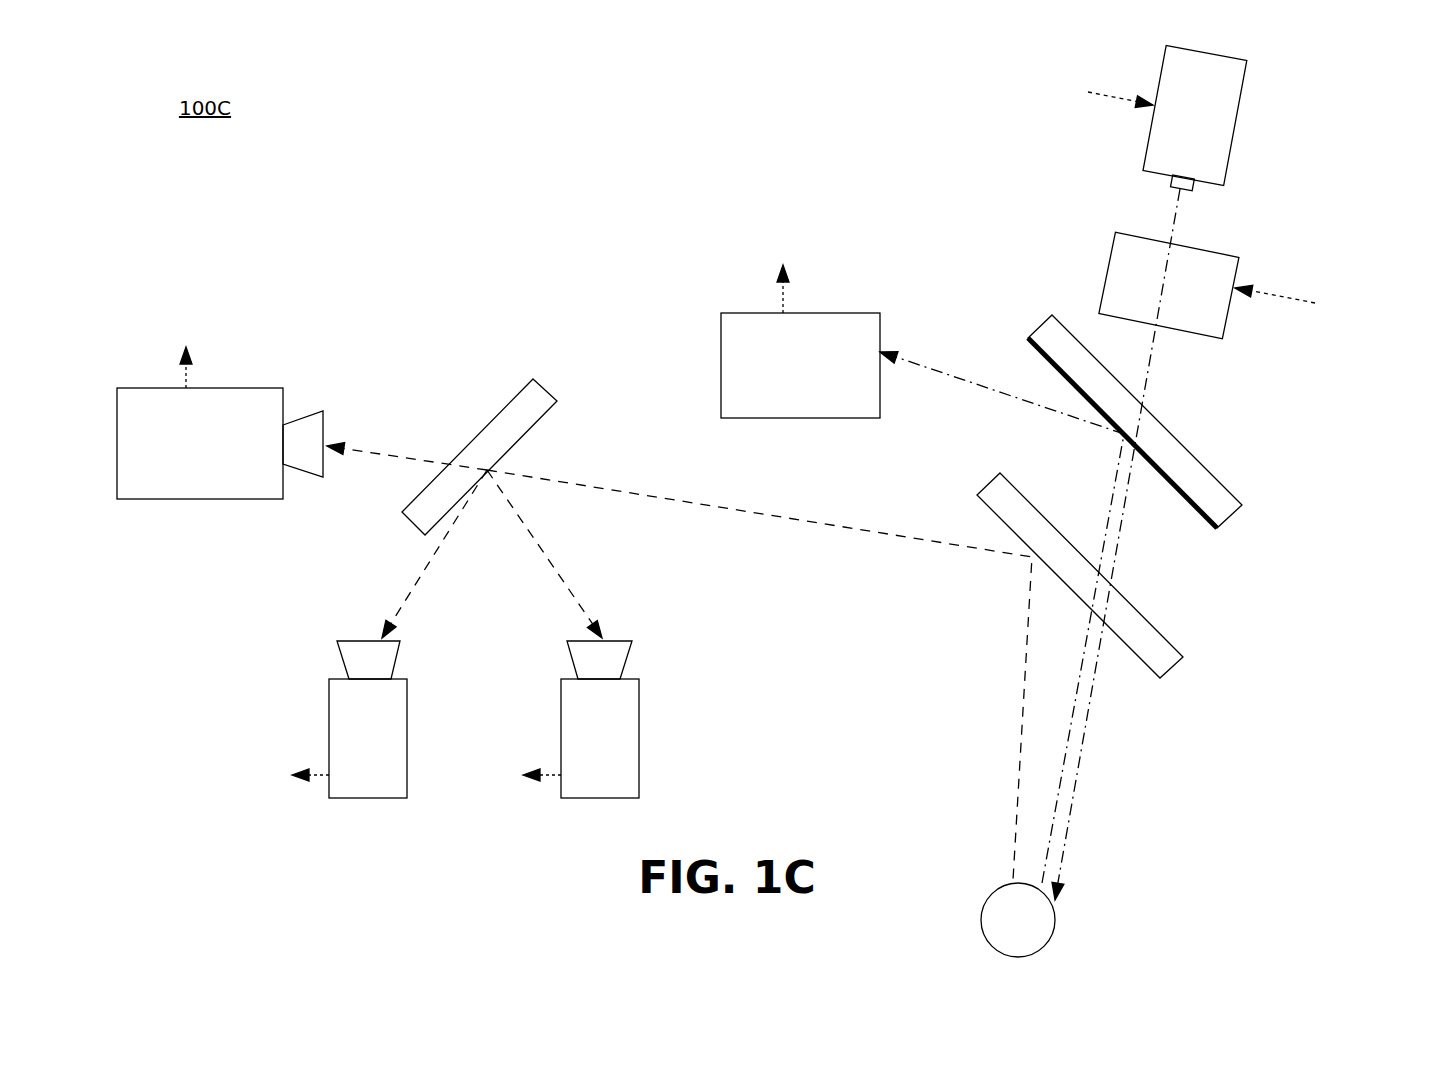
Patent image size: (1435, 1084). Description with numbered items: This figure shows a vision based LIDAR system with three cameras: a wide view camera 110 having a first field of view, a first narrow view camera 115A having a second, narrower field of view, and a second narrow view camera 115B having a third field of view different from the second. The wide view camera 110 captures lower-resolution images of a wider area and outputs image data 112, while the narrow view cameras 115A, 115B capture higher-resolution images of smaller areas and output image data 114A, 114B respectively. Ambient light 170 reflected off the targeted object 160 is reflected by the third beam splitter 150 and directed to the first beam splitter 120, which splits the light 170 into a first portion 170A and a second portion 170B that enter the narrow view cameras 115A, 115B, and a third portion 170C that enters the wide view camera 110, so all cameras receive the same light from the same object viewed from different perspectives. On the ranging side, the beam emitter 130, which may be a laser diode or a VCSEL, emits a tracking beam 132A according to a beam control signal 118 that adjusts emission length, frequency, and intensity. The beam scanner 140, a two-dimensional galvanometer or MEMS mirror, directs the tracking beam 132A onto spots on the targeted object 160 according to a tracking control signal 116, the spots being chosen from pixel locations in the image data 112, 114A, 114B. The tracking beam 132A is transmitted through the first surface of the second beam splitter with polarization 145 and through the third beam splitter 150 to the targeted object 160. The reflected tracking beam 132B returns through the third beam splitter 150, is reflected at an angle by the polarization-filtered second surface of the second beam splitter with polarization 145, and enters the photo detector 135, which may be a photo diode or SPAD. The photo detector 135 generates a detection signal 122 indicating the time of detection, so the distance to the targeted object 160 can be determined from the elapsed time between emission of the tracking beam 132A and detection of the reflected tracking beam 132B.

The wide view camera 110 is at (220, 443).
The image data 112 is at (186, 353).
The image data 114A is at (275, 778).
The image data 114B is at (509, 784).
The first narrow view camera 115A is at (328, 690).
The second narrow view camera 115B is at (560, 690).
The tracking control signal 116 is at (1303, 300).
The beam control signal 118 is at (1100, 102).
The first beam splitter 120 is at (538, 372).
The detection signal 122 is at (785, 300).
The beam emitter 130 is at (1245, 108).
The tracking beam 132A is at (1078, 758).
The reflected tracking beam 132B is at (1070, 732).
The photo detector 135 is at (800, 365).
The beam scanner 140 is at (1113, 252).
The second beam splitter with polarization 145 is at (1210, 472).
The third beam splitter 150 is at (1163, 637).
The targeted object 160 is at (1053, 940).
The light 170 is at (843, 527).
The first portion of light 170A is at (413, 583).
The second portion of light 170B is at (573, 579).
The third portion of light 170C is at (385, 447).